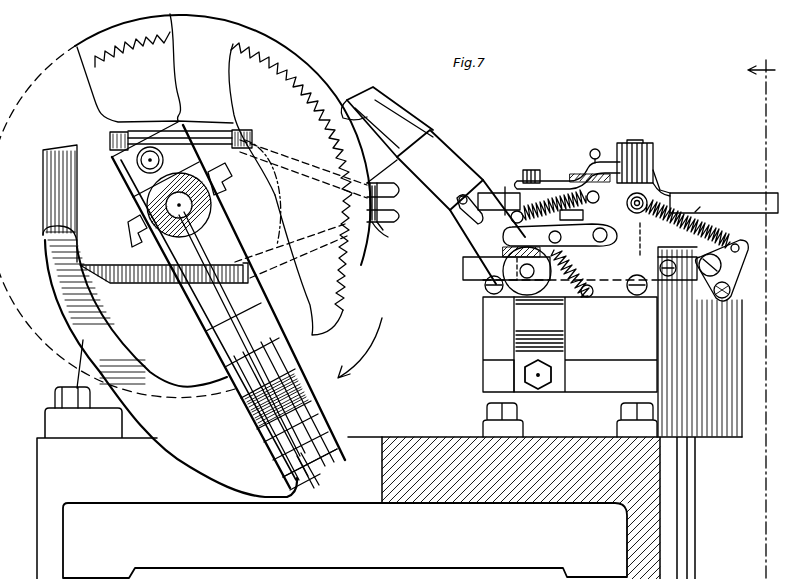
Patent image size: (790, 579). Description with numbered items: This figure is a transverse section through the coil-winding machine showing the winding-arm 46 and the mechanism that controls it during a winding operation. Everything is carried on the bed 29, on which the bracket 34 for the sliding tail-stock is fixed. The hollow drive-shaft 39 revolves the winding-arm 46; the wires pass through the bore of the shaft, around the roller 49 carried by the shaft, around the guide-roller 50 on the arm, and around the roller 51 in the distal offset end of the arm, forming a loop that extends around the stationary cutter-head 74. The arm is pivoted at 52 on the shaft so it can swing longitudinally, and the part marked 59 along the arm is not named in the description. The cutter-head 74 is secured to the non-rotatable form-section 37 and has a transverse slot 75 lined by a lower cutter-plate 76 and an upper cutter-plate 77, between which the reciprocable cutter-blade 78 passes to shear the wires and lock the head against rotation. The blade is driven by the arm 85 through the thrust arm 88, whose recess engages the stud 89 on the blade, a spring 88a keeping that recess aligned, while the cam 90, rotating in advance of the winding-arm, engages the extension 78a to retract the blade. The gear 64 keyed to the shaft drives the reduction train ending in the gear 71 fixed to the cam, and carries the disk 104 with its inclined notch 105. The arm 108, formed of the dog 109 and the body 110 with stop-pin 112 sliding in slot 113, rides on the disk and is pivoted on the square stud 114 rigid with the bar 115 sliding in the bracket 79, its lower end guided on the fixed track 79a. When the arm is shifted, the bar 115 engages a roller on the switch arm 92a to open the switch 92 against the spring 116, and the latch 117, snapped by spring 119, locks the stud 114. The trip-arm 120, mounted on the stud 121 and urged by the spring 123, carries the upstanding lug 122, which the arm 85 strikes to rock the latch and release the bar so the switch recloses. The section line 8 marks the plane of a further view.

The disk 104 is at (287, 57).
The gear 71 is at (155, 68).
The gear 64 is at (298, 88).
The peripheral notch 105 is at (342, 296).
The dog 109 is at (366, 96).
The arm 108 is at (437, 117).
The body 110 is at (438, 138).
The upper cutter-plate 77 is at (394, 184).
The cutter-head 74 is at (44, 205).
The transverse slot 75 is at (388, 237).
The lower cutter-plate 76 is at (383, 237).
The winding-arm 46 is at (213, 330).
The hollow drive-shaft 39 is at (148, 200).
The roller 49 is at (197, 213).
The pivot 52 is at (213, 160).
The shaft 59 is at (247, 356).
The guide-roller 50 is at (310, 392).
The roller 51 is at (313, 469).
The form-section 37 is at (164, 284).
The cam 90 is at (170, 361).
The bracket 34 is at (77, 388).
The bed 29 is at (471, 499).
The bracket 79 is at (570, 356).
The stud 114 is at (500, 344).
The fixed track 79a is at (558, 305).
The slot 113 is at (463, 259).
The stop-pin 112 is at (468, 195).
The latch 117 is at (560, 240).
The spring 119 is at (580, 266).
The spring 123 is at (545, 197).
The stud 89 is at (530, 170).
The extension 78a is at (505, 198).
The thrust arm 88 is at (580, 163).
The spring 88a is at (599, 149).
The trip-arm 120 is at (607, 186).
The arm 85 is at (645, 180).
The stud 121 is at (650, 180).
The upstanding lug 122 is at (680, 185).
The bar 115 is at (698, 186).
The spring 116 is at (702, 206).
The cutter-blade 78 is at (724, 203).
The switch arm 92a is at (729, 263).
The switch 92 is at (700, 342).
The section line 8 is at (761, 311).